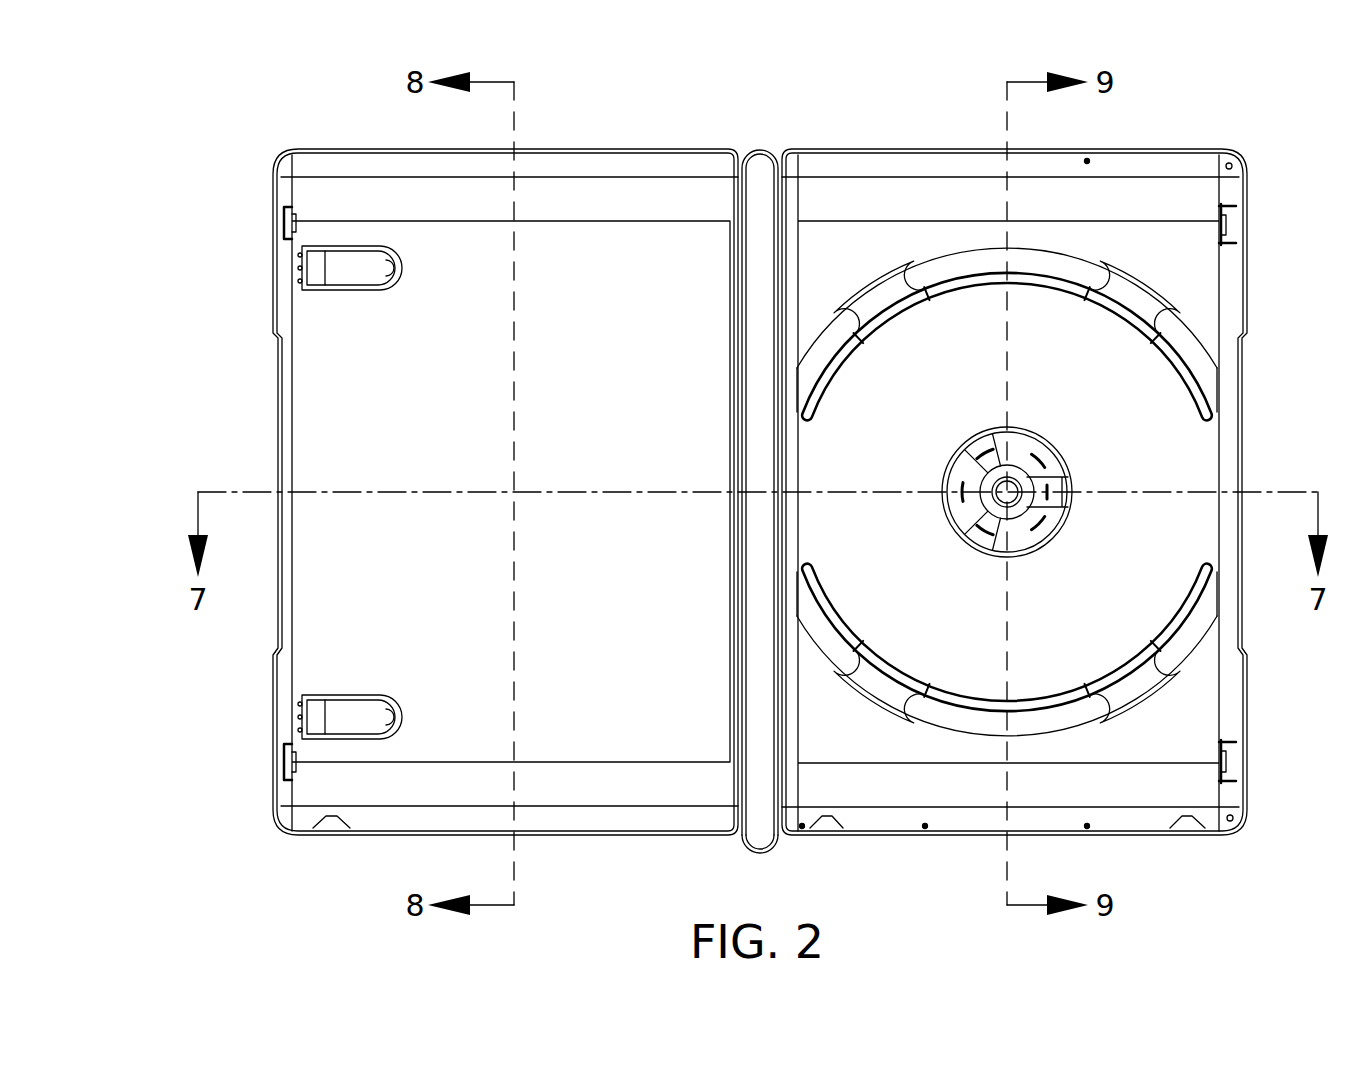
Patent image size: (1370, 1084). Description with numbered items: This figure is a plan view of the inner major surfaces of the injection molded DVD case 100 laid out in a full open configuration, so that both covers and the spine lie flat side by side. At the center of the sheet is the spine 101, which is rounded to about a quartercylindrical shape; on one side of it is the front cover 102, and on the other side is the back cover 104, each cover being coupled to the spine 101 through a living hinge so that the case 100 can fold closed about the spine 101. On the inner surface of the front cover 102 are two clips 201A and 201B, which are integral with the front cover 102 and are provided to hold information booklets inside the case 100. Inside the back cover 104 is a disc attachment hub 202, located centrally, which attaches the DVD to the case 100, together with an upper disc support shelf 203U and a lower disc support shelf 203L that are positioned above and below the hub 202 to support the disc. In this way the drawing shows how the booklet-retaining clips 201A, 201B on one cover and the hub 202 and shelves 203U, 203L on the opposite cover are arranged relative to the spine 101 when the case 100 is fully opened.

The DVD case 100 is at (253, 106).
The spine 101 is at (760, 190).
The front cover 102 is at (1115, 190).
The back cover 104 is at (405, 190).
The clip 201A is at (355, 270).
The clip 201B is at (355, 718).
The disc attachment hub 202 is at (1080, 463).
The upper disc support shelf 203U is at (1168, 352).
The lower disc support shelf 203L is at (1166, 634).